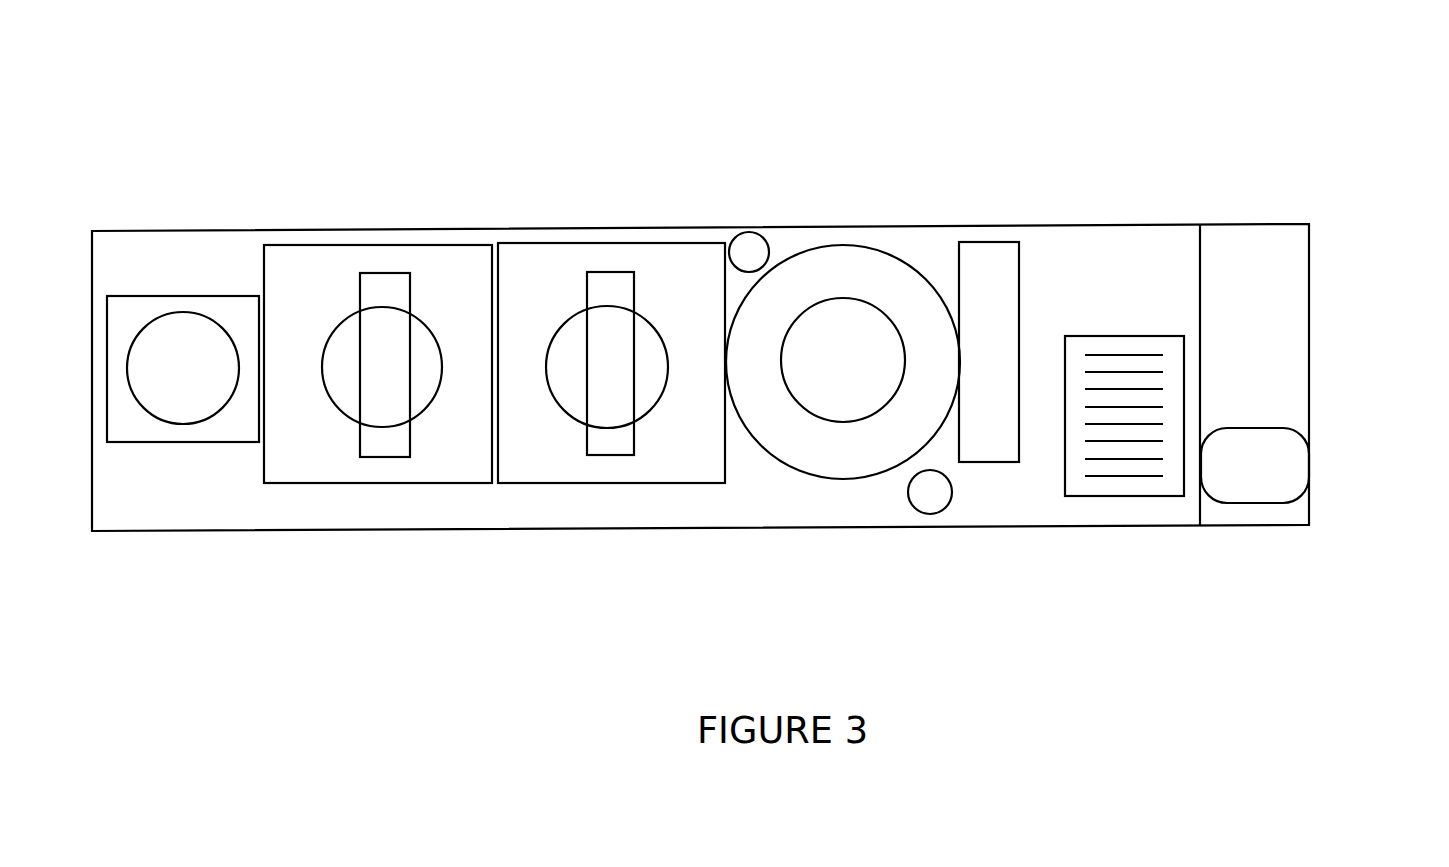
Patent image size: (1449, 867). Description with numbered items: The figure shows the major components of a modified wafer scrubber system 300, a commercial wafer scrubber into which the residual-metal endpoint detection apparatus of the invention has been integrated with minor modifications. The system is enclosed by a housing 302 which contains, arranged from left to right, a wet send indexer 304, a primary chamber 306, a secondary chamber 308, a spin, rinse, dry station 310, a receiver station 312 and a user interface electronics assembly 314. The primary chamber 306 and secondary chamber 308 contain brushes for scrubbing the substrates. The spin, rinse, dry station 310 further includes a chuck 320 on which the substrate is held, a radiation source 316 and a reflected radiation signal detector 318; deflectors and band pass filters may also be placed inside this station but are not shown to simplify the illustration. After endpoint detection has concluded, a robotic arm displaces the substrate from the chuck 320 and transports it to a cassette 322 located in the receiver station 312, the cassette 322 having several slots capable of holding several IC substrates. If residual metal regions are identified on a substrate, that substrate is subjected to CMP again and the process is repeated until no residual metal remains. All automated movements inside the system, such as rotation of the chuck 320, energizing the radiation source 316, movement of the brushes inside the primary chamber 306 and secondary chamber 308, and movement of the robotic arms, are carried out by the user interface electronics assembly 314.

The modified wafer scrubber system 300 is at (328, 149).
The housing 302 is at (1309, 383).
The wet send indexer 304 is at (181, 443).
The primary chamber 306 is at (445, 270).
The secondary chamber 308 is at (657, 268).
The spin, rinse, dry station 310 is at (917, 253).
The receiver station 312 is at (1118, 255).
The user interface electronics assembly 314 is at (1272, 267).
The radiation source 316 is at (766, 240).
The reflected radiation signal detector 318 is at (930, 514).
The chuck 320 is at (815, 382).
The cassette 322 is at (1125, 487).